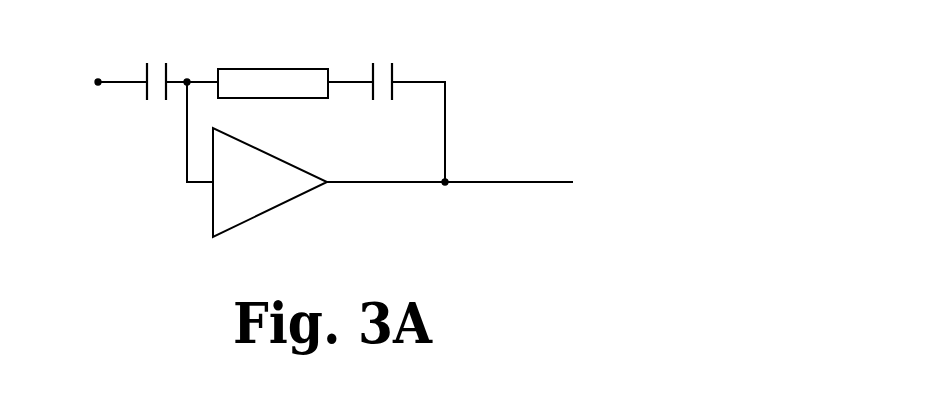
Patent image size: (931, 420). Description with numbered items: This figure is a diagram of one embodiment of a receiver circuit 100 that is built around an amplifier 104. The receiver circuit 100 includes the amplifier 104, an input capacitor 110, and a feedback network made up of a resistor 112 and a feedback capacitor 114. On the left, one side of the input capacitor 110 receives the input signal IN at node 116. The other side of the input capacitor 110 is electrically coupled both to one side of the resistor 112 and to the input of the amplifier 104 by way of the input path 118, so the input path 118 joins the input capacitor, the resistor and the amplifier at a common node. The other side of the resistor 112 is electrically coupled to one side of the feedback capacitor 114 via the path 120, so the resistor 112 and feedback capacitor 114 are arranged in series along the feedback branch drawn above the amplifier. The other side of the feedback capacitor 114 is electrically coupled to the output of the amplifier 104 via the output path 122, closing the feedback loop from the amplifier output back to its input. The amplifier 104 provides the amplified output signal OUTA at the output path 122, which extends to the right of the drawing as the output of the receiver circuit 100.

The receiver circuit 100 is at (507, 56).
The amplifier 104 is at (255, 199).
The input capacitor 110 is at (146, 66).
The resistor 112 is at (268, 69).
The feedback capacitor 114 is at (372, 66).
The input signal node 116 is at (98, 84).
The input path 118 is at (187, 183).
The path 120 is at (350, 83).
The output path 122 is at (446, 184).